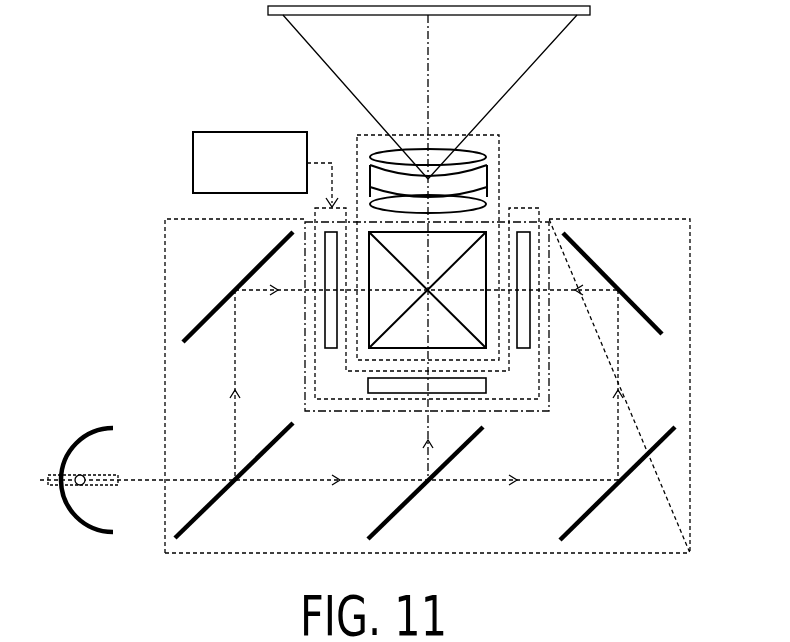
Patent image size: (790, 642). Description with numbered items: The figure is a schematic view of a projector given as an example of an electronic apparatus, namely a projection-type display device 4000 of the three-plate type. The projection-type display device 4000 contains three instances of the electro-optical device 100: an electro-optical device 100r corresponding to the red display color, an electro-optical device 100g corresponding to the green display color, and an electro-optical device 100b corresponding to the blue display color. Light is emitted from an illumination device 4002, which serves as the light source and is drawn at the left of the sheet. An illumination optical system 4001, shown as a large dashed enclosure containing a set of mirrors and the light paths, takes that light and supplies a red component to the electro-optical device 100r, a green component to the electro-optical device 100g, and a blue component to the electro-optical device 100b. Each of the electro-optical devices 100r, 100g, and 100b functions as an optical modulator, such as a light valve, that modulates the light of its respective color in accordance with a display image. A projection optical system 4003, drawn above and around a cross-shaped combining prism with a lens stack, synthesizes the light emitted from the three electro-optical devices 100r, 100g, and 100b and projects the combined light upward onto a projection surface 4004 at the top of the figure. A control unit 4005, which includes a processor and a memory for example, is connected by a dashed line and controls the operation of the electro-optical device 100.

The projection-type display device 4000 is at (170, 82).
The illumination optical system 4001 is at (658, 218).
The illumination device 4002 is at (95, 427).
The projection optical system 4003 is at (500, 173).
The projection surface 4004 is at (478, 17).
The control unit 4005 is at (192, 170).
The electro-optical device 100 is at (427, 353).
The electro-optical device 100r is at (325, 336).
The electro-optical device 100g is at (377, 395).
The electro-optical device 100b is at (530, 328).